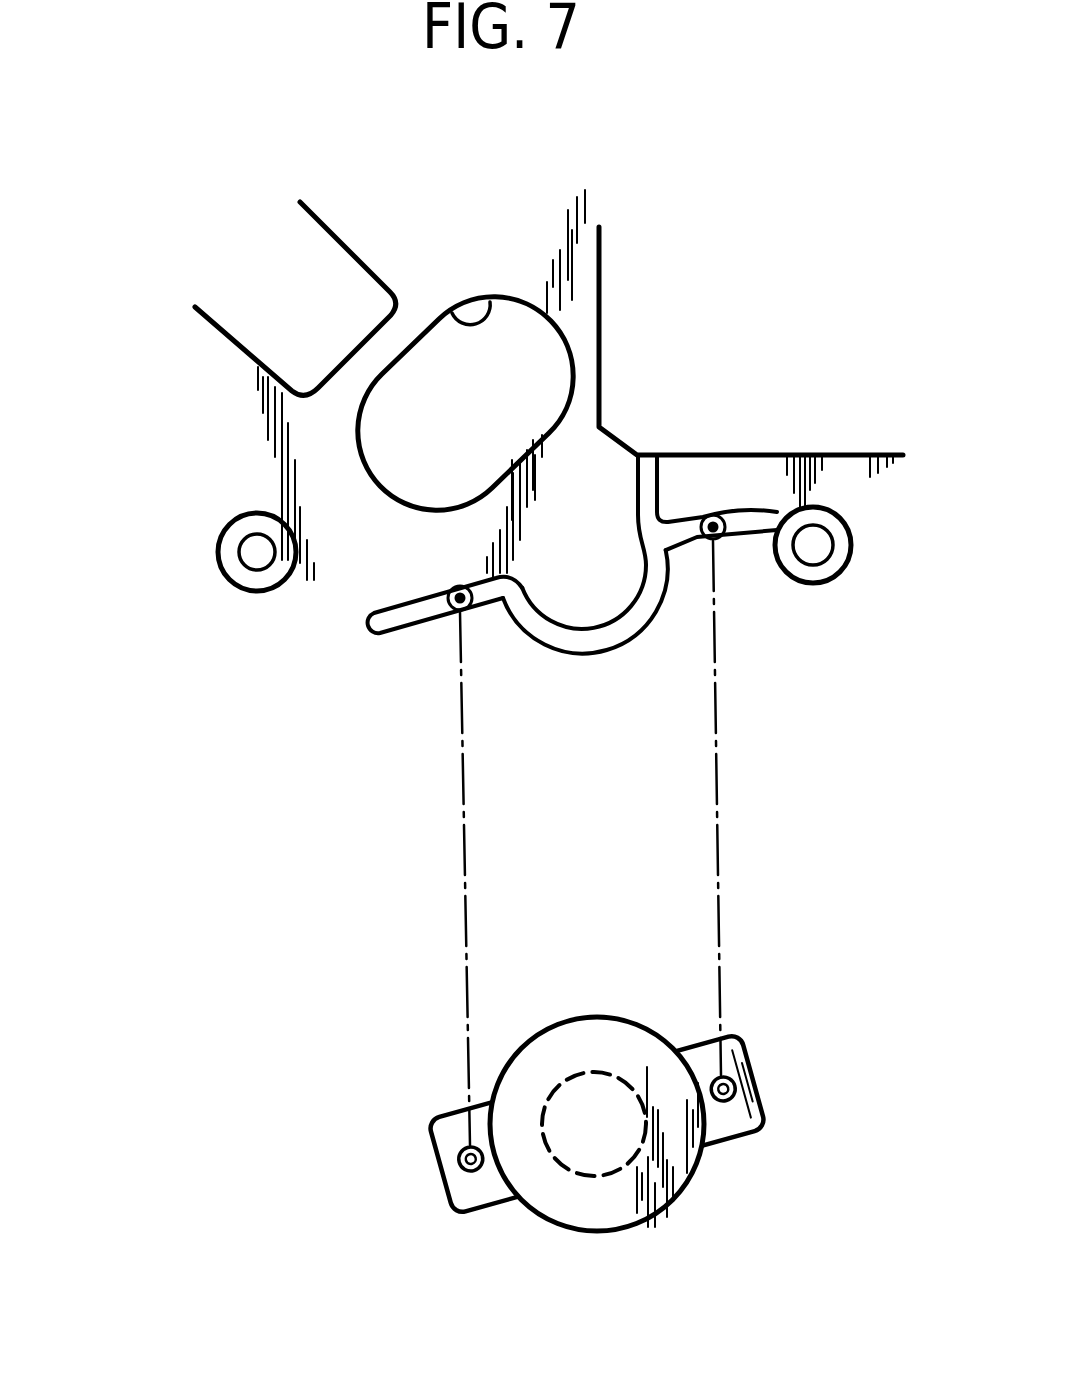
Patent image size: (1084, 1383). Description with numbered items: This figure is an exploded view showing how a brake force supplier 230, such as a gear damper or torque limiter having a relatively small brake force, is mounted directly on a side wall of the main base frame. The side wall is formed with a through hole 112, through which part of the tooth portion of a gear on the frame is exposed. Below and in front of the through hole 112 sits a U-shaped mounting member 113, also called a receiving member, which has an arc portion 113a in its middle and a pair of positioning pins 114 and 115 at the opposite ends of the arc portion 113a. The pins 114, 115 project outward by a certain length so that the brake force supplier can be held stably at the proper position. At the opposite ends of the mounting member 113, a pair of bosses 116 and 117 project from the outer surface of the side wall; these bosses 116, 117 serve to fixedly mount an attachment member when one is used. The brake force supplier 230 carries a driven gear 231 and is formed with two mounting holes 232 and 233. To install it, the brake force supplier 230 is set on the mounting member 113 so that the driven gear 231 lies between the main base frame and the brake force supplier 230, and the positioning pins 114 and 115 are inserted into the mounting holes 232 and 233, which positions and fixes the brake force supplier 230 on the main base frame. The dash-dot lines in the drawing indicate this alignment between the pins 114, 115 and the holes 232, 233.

The through hole 112 is at (485, 318).
The mounting member 113 is at (572, 611).
The arc portion 113a is at (538, 638).
The positioning pin 114 is at (445, 614).
The positioning pin 115 is at (718, 538).
The boss 116 is at (230, 570).
The boss 117 is at (837, 562).
The brake force supplier 230 is at (677, 1193).
The driven gear 231 is at (582, 1165).
The mounting hole 232 is at (468, 1180).
The mounting hole 233 is at (772, 1103).